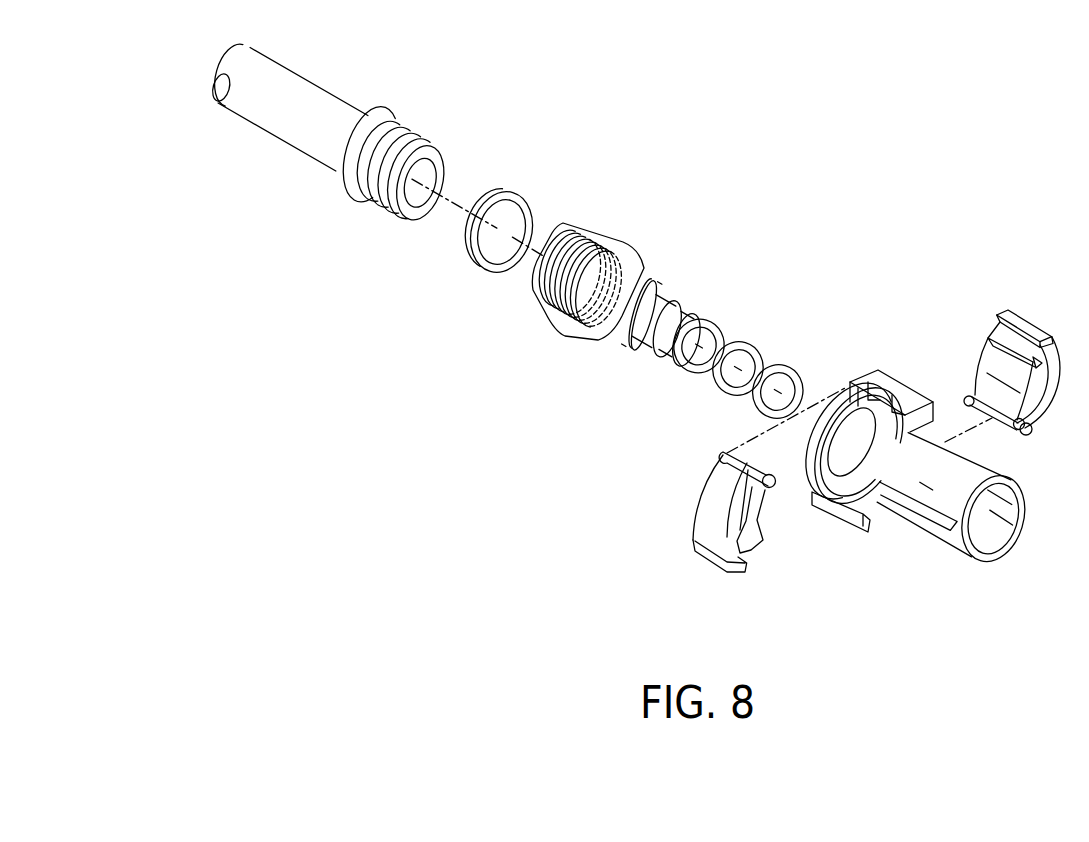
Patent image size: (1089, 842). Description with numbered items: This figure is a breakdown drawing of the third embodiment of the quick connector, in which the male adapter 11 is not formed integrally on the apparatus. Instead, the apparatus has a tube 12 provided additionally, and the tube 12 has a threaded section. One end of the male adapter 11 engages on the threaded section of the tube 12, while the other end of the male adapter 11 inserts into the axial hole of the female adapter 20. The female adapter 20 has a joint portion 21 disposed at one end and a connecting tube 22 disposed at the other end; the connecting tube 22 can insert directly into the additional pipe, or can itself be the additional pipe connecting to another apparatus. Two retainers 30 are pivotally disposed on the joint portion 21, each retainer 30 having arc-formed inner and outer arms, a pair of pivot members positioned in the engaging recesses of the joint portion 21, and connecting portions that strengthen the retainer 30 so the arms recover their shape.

The male adapter 11 is at (643, 281).
The tube 12 is at (298, 86).
The female adapter 20 is at (918, 446).
The joint portion 21 is at (893, 377).
The connecting tube 22 is at (942, 535).
The retainer 30 is at (1044, 303).